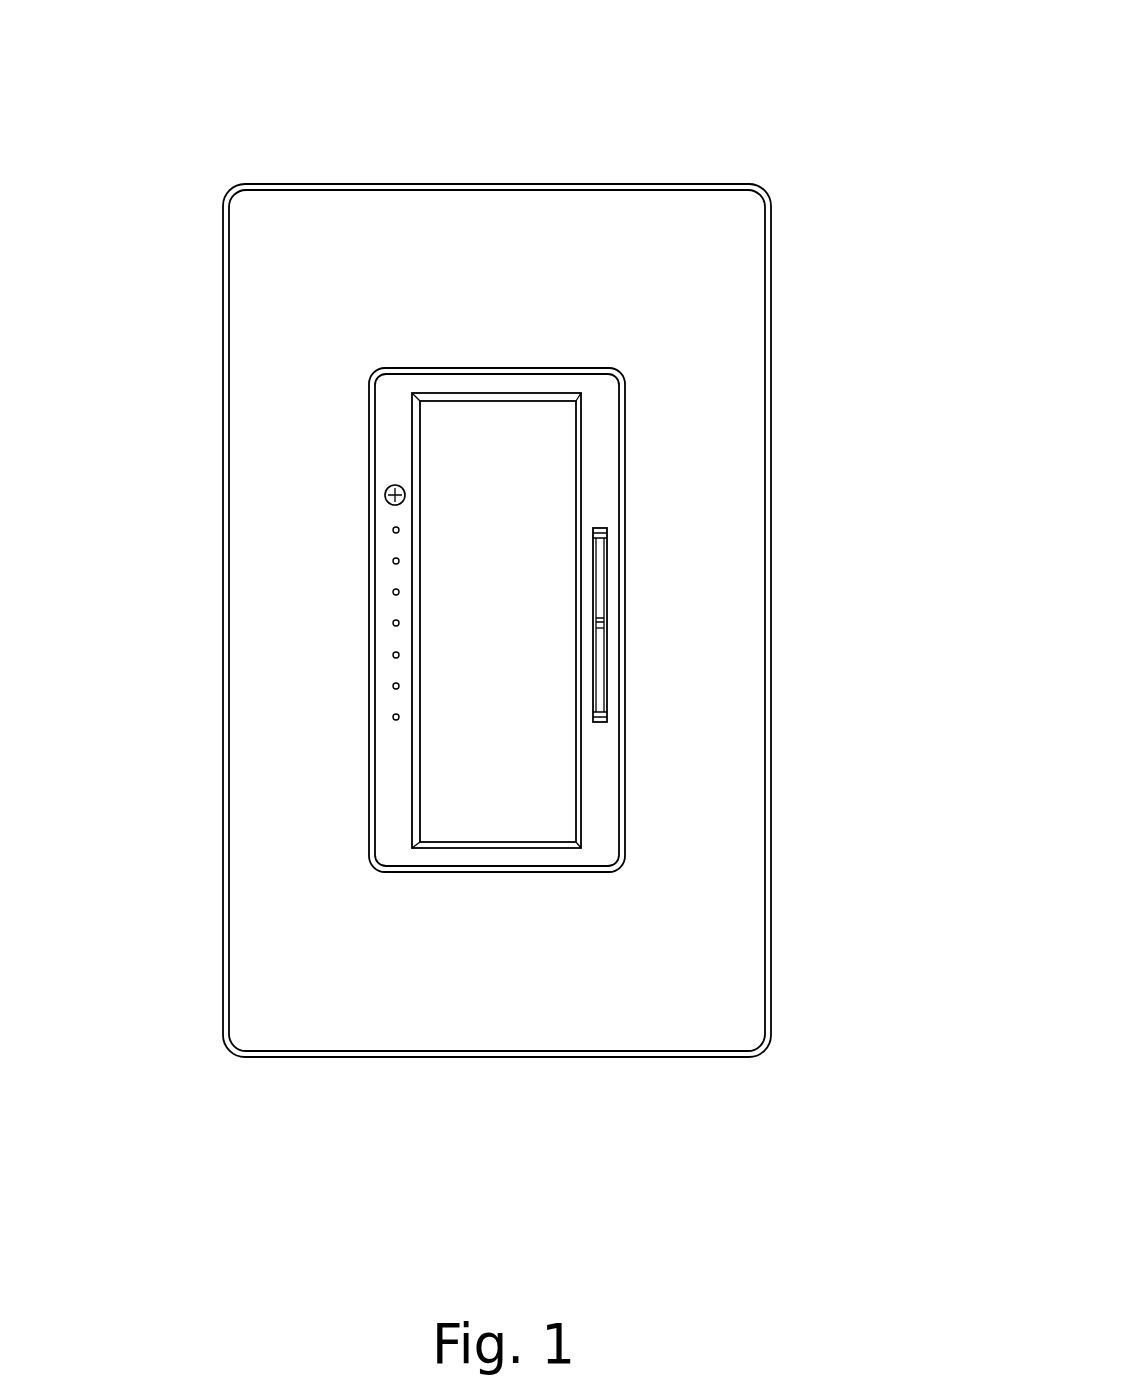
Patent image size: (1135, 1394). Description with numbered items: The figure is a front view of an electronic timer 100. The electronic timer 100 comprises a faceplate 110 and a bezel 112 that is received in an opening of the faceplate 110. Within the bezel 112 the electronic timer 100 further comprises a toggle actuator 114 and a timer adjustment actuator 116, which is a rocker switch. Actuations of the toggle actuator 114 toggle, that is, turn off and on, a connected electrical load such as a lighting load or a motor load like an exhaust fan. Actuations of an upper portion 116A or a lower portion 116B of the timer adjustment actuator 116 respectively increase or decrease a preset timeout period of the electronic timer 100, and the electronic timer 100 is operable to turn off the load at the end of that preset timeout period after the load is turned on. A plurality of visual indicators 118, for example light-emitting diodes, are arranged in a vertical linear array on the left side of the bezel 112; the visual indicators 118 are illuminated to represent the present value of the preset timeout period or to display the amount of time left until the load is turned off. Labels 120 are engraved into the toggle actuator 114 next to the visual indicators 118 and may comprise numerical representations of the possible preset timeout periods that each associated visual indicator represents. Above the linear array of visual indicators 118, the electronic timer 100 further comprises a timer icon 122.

The electronic timer 100 is at (682, 77).
The faceplate 110 is at (432, 973).
The bezel 112 is at (395, 828).
The toggle actuator 114 is at (525, 487).
The timer adjustment actuator 116 is at (757, 642).
The upper portion 116A is at (598, 573).
The lower portion 116B is at (598, 687).
The visual indicators 118 is at (392, 532).
The labels 120 is at (468, 530).
The timer icon 122 is at (385, 498).